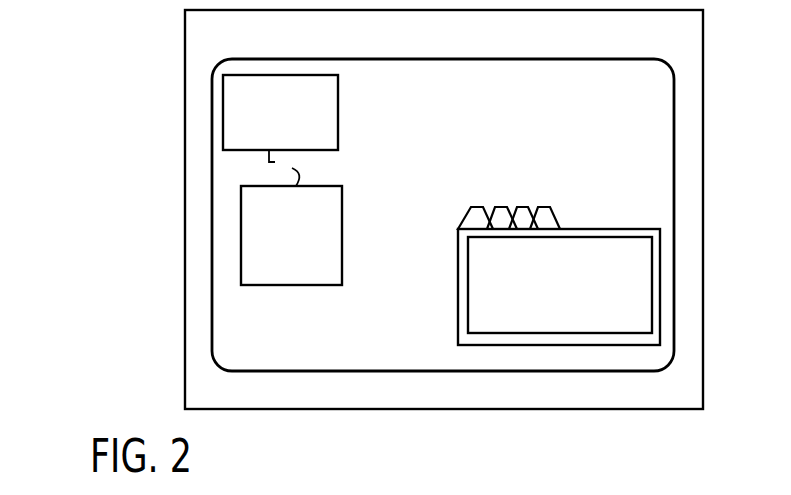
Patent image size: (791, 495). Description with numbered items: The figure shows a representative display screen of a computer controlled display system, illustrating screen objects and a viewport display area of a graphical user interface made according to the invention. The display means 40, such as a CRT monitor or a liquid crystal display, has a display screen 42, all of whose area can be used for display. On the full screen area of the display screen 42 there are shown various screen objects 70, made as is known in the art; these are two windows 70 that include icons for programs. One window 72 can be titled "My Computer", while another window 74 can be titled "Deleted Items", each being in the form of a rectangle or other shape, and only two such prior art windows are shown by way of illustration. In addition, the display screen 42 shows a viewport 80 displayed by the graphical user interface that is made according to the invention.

The display means 40 is at (122, 186).
The display screen 42 is at (296, 341).
The screen objects 70 is at (284, 168).
The window 72 is at (358, 108).
The window 74 is at (360, 213).
The viewport 80 is at (597, 229).